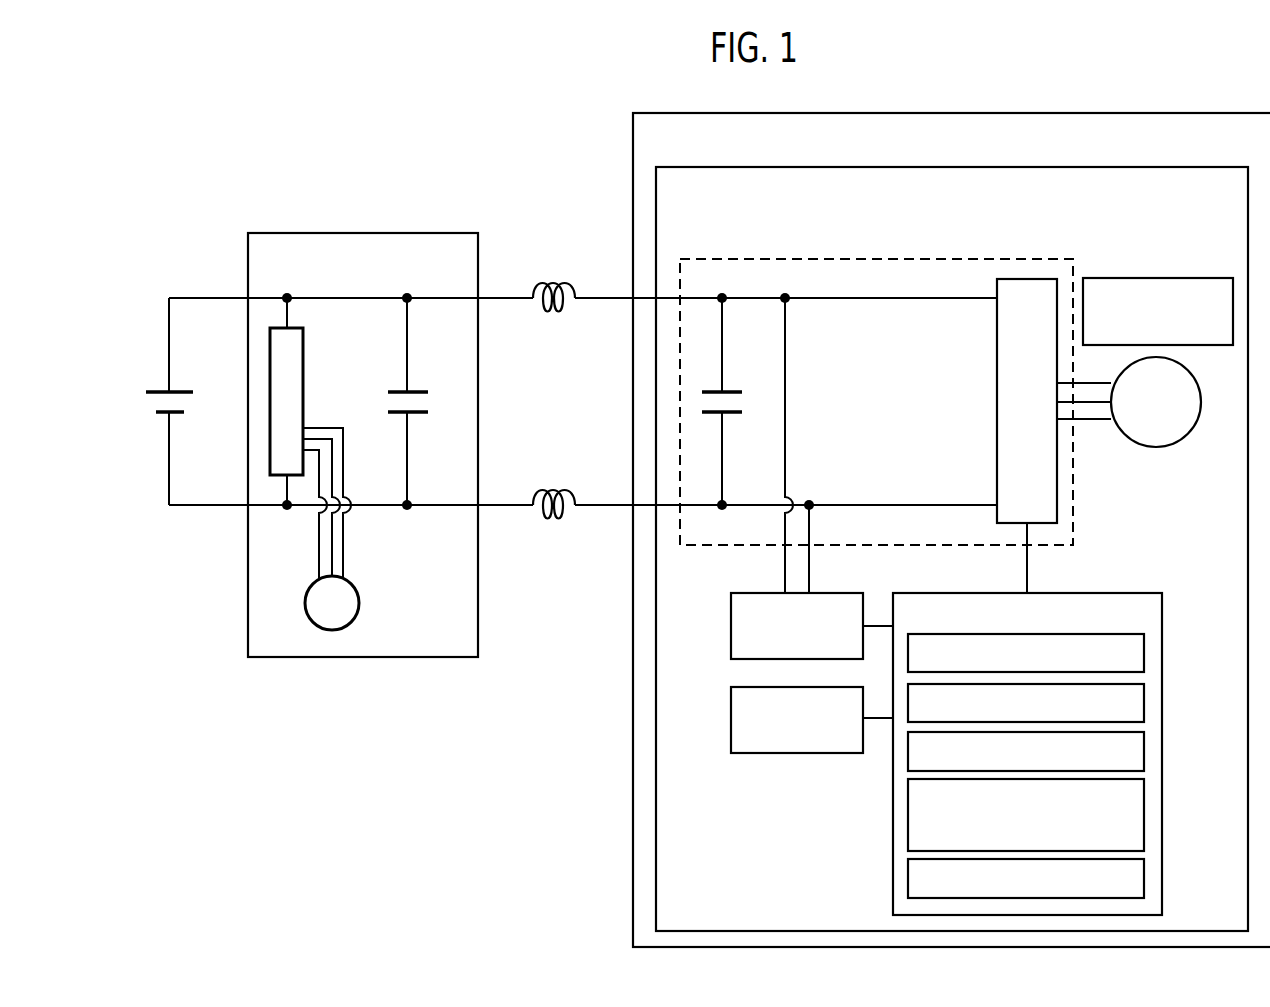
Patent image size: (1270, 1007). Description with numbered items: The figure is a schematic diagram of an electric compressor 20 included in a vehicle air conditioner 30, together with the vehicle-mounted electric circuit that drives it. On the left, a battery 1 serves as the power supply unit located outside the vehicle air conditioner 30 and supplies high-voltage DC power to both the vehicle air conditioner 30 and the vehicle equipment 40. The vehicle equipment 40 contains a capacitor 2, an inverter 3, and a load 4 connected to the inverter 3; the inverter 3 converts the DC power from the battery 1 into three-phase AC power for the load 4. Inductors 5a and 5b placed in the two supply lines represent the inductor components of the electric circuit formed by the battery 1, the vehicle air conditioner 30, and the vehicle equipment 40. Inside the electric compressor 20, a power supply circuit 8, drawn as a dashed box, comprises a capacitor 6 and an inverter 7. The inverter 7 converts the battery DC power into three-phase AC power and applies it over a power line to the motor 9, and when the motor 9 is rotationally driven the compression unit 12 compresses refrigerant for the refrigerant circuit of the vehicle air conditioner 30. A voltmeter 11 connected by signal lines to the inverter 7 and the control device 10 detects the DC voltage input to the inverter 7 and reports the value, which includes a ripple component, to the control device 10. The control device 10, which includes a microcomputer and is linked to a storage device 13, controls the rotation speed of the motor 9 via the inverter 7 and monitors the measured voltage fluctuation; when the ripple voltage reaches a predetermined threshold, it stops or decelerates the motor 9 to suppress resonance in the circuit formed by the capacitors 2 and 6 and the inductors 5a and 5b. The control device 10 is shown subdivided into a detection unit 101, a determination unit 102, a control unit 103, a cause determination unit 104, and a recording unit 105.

The battery 1 is at (178, 390).
The capacitor 2 is at (418, 390).
The inverter 3 is at (305, 345).
The load 4 is at (360, 603).
The inductor 5a is at (550, 285).
The inductor 5b is at (550, 492).
The capacitor 6 is at (738, 388).
The inverter 7 is at (996, 402).
The power supply circuit 8 is at (1012, 259).
The motor 9 is at (1151, 447).
The control device 10 is at (1105, 593).
The voltmeter 11 is at (838, 593).
The compression unit 12 is at (1178, 278).
The storage device 13 is at (835, 753).
The electric compressor 20 is at (1178, 167).
The vehicle air conditioner 30 is at (1178, 113).
The vehicle equipment 40 is at (415, 233).
The detection unit 101 is at (1144, 655).
The determination unit 102 is at (1144, 702).
The control unit 103 is at (1144, 752).
The cause determination unit 104 is at (1144, 815).
The recording unit 105 is at (1144, 878).